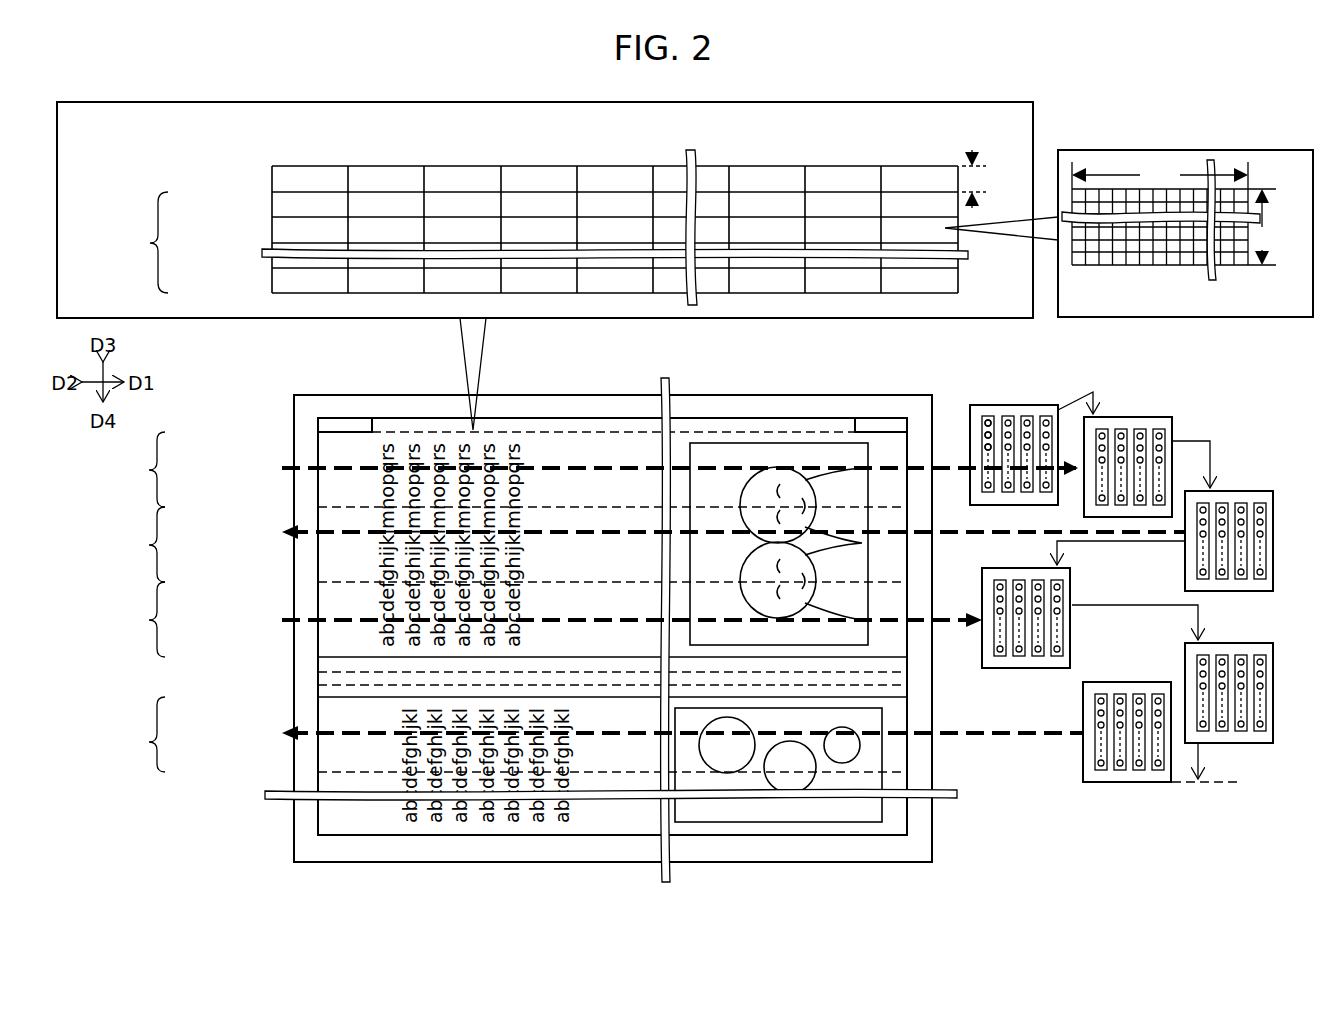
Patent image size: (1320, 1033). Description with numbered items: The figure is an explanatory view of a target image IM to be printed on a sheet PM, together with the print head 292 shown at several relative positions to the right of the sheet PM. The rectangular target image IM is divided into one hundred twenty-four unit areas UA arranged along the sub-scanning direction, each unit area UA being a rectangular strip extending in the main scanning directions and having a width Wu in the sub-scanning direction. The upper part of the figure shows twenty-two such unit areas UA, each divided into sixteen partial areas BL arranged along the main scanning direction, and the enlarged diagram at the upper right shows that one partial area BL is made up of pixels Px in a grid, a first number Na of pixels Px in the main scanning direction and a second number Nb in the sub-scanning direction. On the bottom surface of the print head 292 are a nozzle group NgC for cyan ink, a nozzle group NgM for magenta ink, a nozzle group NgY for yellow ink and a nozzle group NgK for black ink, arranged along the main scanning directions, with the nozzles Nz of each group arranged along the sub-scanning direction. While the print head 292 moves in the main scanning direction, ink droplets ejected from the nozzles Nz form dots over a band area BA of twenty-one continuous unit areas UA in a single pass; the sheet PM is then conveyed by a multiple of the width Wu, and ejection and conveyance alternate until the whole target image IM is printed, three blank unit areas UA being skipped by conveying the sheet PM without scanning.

The print head 292 is at (1124, 570).
The target image IM is at (564, 418).
The sheet PM is at (754, 395).
The partial area BL is at (1228, 292).
The unit area UA is at (318, 835).
The band area BA is at (125, 602).
The nozzle Nz is at (984, 447).
The nozzle group for black ink NgK is at (988, 416).
The nozzle group for yellow ink NgY is at (1008, 416).
The nozzle group for magenta ink NgM is at (1027, 416).
The nozzle group for cyan ink NgC is at (1046, 416).
The pixel Px is at (1126, 258).
The width of unit area Wu is at (992, 179).
The first number Na is at (1160, 175).
The second number Nb is at (1263, 227).